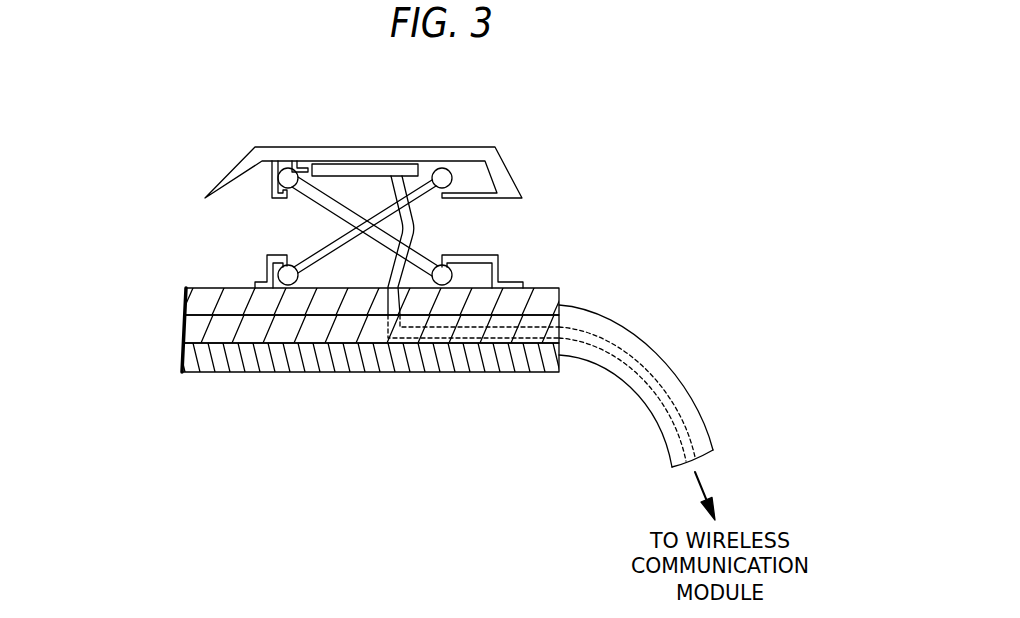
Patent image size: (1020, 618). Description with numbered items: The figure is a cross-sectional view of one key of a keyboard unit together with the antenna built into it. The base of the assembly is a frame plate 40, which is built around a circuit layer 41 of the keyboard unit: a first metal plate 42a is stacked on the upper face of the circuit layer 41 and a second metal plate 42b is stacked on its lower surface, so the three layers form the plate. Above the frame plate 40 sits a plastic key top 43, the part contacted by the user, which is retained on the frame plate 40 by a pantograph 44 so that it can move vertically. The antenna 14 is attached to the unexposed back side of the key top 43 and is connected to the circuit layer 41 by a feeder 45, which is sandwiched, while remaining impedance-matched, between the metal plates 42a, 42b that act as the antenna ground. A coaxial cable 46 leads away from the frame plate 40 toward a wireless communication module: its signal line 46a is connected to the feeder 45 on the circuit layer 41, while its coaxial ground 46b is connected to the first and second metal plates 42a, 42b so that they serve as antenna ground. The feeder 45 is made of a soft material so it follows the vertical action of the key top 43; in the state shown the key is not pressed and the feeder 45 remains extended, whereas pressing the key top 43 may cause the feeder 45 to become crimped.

The antenna 14 is at (373, 172).
The frame plate 40 is at (326, 328).
The circuit layer 41 is at (184, 330).
The first metal plate 42a is at (185, 301).
The second metal plate 42b is at (337, 357).
The key top 43 is at (513, 181).
The pantograph 44 is at (332, 240).
The feeder 45 is at (413, 228).
The coaxial cable 46 is at (550, 372).
The signal line 46a is at (617, 347).
The coaxial ground 46b is at (657, 407).